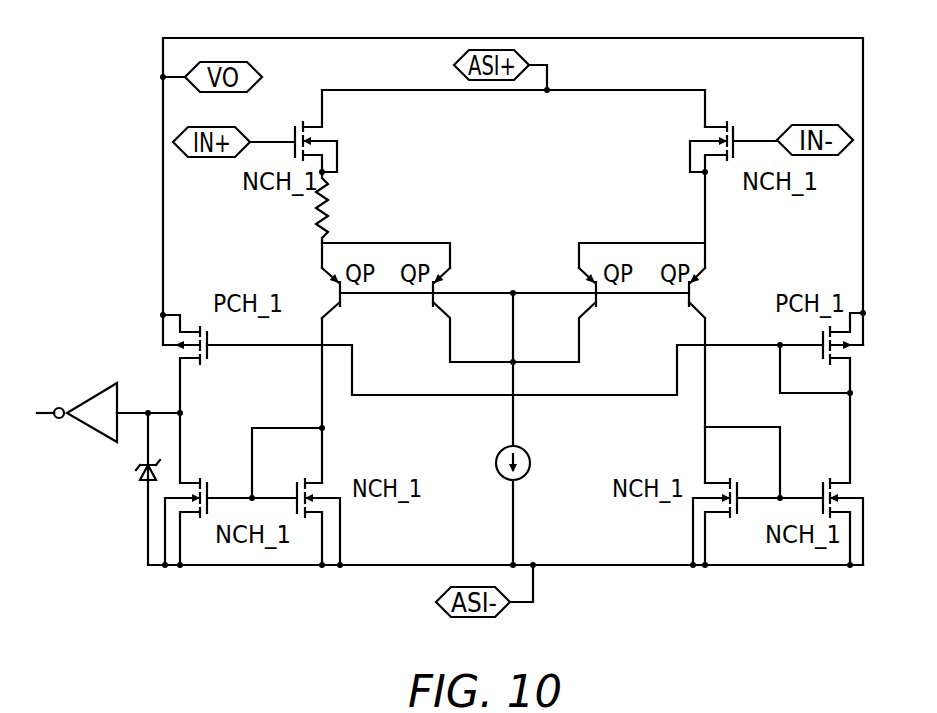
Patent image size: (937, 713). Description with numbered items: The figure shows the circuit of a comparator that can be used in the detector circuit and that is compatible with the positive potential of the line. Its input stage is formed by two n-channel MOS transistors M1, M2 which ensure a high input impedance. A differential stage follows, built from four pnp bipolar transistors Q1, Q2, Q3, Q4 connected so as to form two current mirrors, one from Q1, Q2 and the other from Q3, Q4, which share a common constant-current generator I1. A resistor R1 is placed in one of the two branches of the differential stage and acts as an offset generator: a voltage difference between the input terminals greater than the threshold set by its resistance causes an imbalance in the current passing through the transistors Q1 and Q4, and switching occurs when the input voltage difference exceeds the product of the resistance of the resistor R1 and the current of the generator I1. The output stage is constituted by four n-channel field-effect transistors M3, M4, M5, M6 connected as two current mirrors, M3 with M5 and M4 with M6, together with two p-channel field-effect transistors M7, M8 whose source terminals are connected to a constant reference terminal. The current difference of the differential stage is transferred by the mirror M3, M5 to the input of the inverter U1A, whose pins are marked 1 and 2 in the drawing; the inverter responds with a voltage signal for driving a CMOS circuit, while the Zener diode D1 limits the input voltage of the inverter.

The n-channel MOS transistor M1 is at (293, 131).
The n-channel MOS transistor M2 is at (733, 133).
The n-channel field-effect transistor M3 is at (296, 496).
The n-channel field-effect transistor M4 is at (736, 496).
The n-channel field-effect transistor M5 is at (208, 489).
The n-channel field-effect transistor M6 is at (821, 479).
The p-channel field-effect transistor M7 is at (204, 364).
The p-channel field-effect transistor M8 is at (821, 353).
The pnp bipolar transistor Q1 is at (348, 299).
The pnp bipolar transistor Q2 is at (456, 315).
The pnp bipolar transistor Q3 is at (573, 315).
The pnp bipolar transistor Q4 is at (682, 299).
The resistor R1 is at (309, 207).
The Zener diode D1 is at (135, 489).
The constant-current generator I1 is at (522, 451).
The inverter U1A is at (77, 399).
The inverter output pin 1 is at (132, 398).
The inverter input pin 2 is at (50, 398).